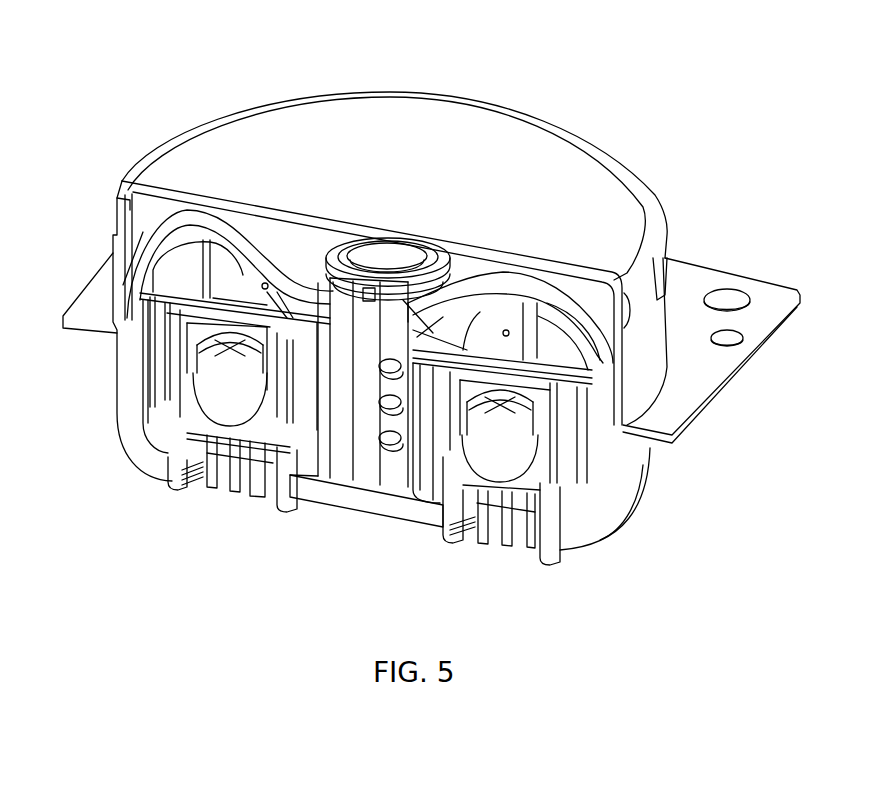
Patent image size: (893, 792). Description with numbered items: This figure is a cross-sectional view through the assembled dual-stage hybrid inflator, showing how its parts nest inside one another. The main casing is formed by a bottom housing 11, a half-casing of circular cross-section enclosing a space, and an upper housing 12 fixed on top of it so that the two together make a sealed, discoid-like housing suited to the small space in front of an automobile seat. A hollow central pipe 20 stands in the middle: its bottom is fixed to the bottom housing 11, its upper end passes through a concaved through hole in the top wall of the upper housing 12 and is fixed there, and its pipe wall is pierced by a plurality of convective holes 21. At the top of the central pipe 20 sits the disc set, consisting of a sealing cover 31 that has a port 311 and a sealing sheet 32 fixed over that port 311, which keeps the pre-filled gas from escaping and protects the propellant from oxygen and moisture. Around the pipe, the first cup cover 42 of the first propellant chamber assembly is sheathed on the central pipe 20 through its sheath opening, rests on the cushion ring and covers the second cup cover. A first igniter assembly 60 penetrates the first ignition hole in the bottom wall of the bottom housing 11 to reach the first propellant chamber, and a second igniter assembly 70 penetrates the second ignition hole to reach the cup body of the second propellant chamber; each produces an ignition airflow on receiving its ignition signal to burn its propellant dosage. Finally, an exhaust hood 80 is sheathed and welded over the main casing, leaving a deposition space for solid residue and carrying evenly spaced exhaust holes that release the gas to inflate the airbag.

The bottom housing 11 is at (133, 423).
The upper housing 12 is at (222, 230).
The central pipe 20 is at (333, 447).
The convective holes 21 is at (392, 450).
The sealing cover 31 is at (432, 258).
The sealing sheet 32 is at (397, 255).
The port 311 is at (366, 250).
The first cup cover 42 is at (185, 283).
The first igniter assembly 60 is at (510, 475).
The second igniter assembly 70 is at (230, 422).
The exhaust hood 80 is at (582, 181).